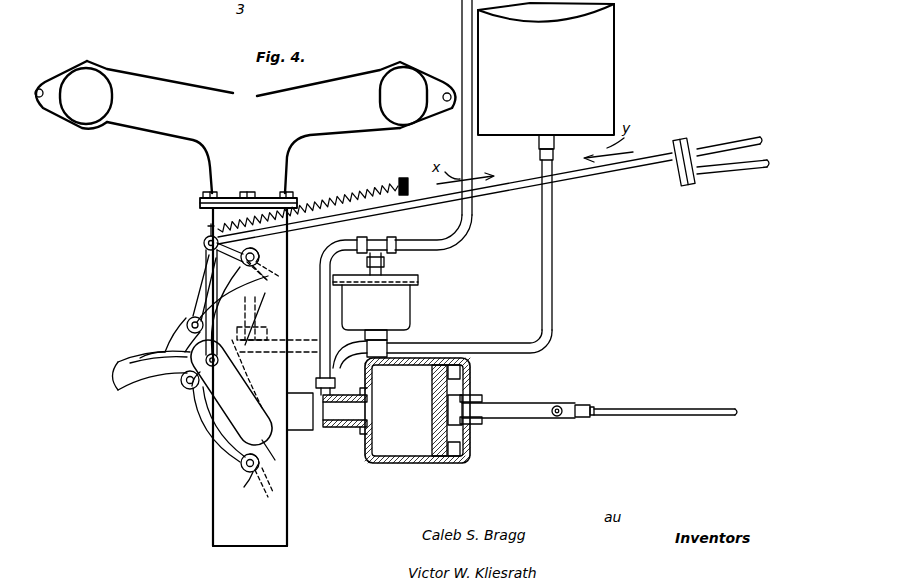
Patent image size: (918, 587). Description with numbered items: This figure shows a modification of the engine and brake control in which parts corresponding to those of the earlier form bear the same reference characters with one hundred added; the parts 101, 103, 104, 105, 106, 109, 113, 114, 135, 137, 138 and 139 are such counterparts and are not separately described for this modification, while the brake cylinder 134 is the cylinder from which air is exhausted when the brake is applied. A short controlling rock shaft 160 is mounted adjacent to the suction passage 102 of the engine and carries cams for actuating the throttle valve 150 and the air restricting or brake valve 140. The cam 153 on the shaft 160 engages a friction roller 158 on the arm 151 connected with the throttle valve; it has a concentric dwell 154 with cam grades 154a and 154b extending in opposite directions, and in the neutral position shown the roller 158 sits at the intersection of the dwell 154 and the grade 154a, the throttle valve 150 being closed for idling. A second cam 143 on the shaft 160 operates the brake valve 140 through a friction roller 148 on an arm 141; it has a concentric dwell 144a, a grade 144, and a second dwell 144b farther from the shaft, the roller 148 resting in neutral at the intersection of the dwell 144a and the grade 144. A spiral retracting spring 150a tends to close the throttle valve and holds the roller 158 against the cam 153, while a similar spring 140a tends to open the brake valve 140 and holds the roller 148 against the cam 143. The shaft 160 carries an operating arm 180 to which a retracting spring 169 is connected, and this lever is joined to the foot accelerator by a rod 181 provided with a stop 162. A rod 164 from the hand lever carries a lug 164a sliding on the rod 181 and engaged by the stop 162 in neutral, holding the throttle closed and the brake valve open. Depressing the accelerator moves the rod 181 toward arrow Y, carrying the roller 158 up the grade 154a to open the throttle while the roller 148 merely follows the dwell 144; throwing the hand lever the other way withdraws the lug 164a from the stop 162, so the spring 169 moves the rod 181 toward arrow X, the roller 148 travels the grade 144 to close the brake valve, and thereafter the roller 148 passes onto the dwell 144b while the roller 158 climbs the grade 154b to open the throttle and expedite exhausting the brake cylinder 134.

The handlebar 101 is at (233, 98).
The suction passage 102 is at (216, 466).
The post lower end 103 is at (256, 547).
The reservoir 104 is at (405, 309).
The pipe from tank 105 is at (543, 222).
The fluid tank 106 is at (607, 78).
The pipe connection 109 is at (296, 345).
The tee fitting 113 is at (383, 252).
The pipe 114 is at (464, 44).
The brake cylinder 134 is at (397, 465).
The piston 135 is at (470, 378).
The piston rod 137 is at (515, 410).
The connecting rod 138 is at (665, 416).
The pipe to cylinder 139 is at (335, 427).
The air restricting or brake valve 140 is at (265, 492).
The spring 140a is at (260, 478).
The arm 141 is at (227, 417).
The second cam 143 is at (250, 408).
The cam grade 144 is at (248, 394).
The dwell 144a is at (144, 393).
The second dwell 144b is at (261, 440).
The friction roller 148 is at (190, 389).
The throttle valve 150 is at (268, 263).
The retracting spring 150a is at (257, 251).
The arm 151 is at (207, 297).
The cam 153 is at (227, 297).
The dwell 154 is at (190, 320).
The cam grade 154a is at (217, 305).
The second cam grade 154b is at (157, 347).
The friction roller 158 is at (186, 325).
The controlling rock shaft 160 is at (133, 361).
The stop 162 is at (688, 173).
The rod 164 is at (772, 164).
The lug 164a is at (690, 141).
The retracting spring 169 is at (338, 201).
The operating arm 180 is at (205, 250).
The rod 181 is at (603, 170).